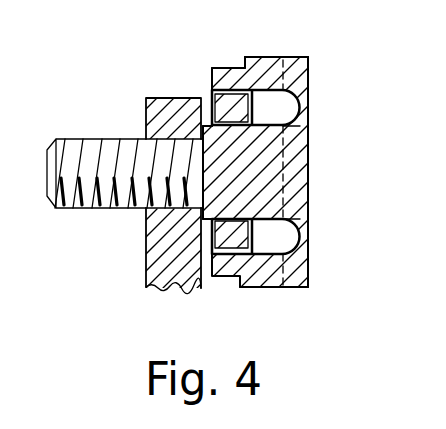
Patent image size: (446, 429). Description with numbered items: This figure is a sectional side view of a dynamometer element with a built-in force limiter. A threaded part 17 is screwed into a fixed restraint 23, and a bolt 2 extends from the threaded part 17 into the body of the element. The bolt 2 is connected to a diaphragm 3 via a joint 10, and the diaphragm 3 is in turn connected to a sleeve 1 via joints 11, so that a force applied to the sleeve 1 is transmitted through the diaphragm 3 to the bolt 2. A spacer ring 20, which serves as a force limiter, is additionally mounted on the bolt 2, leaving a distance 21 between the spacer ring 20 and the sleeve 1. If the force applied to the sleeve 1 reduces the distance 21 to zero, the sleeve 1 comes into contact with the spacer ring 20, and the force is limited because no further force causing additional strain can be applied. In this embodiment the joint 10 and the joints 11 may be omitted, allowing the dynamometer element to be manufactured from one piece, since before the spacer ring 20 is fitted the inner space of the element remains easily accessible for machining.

The sleeve 1 is at (224, 80).
The bolt 2 is at (222, 148).
The diaphragm 3 is at (303, 132).
The joint 10 is at (282, 214).
The joints 11 is at (307, 58).
The threaded part 17 is at (92, 209).
The spacer ring 20 is at (224, 103).
The distance 21 is at (222, 97).
The fixed restraint 23 is at (157, 270).